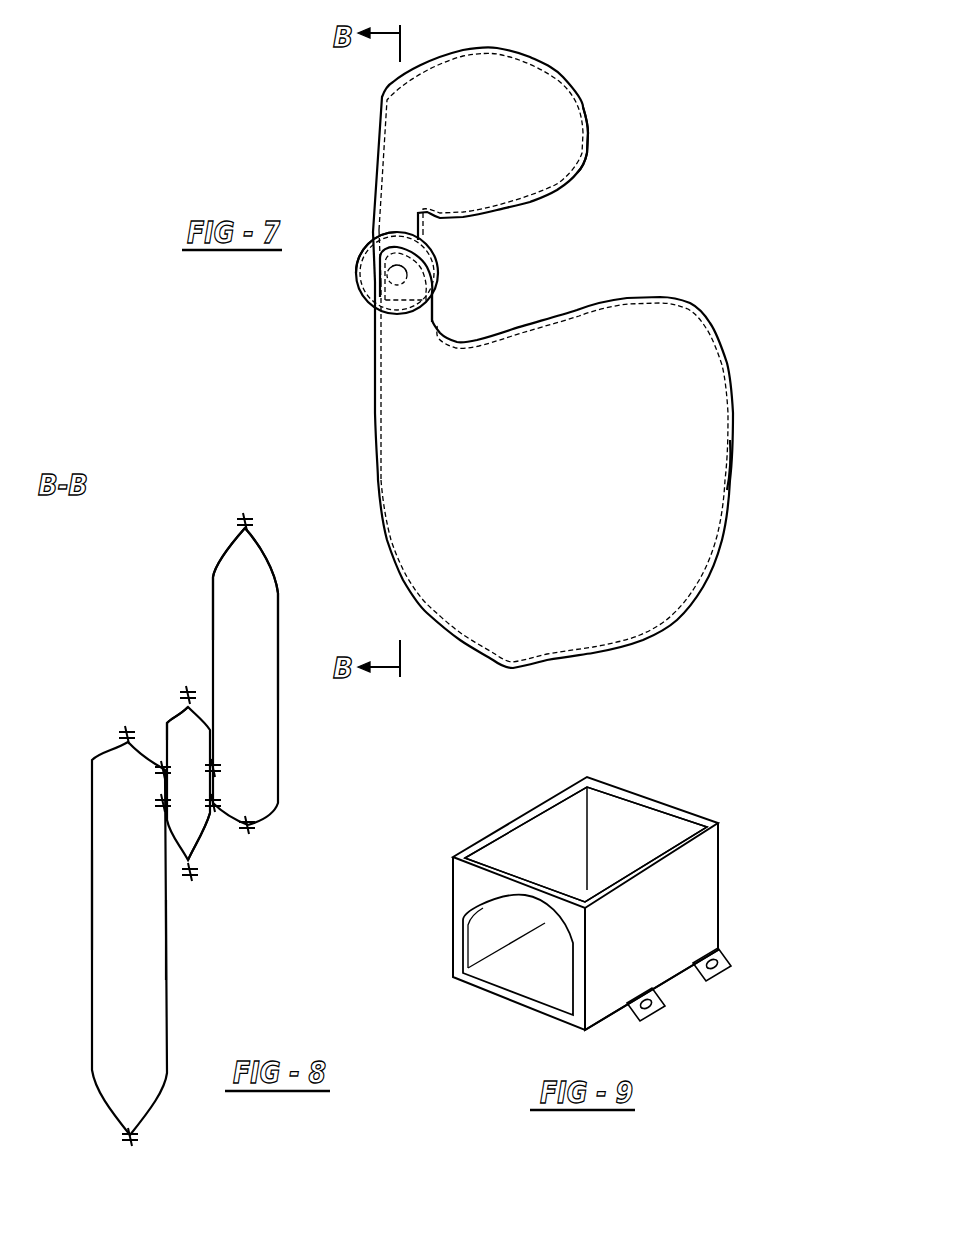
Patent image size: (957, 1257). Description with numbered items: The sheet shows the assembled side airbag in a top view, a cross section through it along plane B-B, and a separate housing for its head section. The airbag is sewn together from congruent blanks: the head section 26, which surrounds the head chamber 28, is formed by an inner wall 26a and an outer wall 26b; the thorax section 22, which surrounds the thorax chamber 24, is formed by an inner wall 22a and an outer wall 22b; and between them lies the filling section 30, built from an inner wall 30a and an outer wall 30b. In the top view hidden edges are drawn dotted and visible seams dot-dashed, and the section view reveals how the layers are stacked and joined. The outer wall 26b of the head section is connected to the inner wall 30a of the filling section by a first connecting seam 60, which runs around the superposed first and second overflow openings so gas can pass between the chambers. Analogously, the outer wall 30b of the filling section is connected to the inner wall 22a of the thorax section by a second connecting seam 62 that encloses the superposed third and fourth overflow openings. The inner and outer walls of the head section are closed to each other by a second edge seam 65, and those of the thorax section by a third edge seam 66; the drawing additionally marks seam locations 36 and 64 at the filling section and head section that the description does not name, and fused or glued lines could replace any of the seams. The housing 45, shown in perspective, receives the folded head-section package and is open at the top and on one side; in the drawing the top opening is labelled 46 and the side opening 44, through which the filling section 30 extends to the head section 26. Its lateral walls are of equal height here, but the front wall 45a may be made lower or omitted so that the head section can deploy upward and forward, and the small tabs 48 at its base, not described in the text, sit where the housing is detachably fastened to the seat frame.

In FIG. 8, the thorax section 22 is at (88, 1012).
In FIG. 8, the inner wall of the thorax section 22a is at (167, 937).
In FIG. 7, the outer wall of the thorax section 22b is at (658, 535).
In FIG. 8, the outer wall of the thorax section 22b is at (88, 895).
In FIG. 8, the thorax chamber 24 is at (130, 980).
In FIG. 8, the head section 26 is at (280, 803).
In FIG. 8, the inner wall of the head section 26a is at (278, 592).
In FIG. 7, the outer wall of the head section 26b is at (530, 103).
In FIG. 8, the outer wall of the head section 26b is at (213, 577).
In FIG. 8, the head chamber 28 is at (255, 652).
In FIG. 8, the filling section 30 is at (217, 830).
In FIG. 8, the inner wall of the filling section 30a is at (217, 833).
In FIG. 7, the outer wall of the filling section 30b is at (437, 262).
In FIG. 8, the outer wall of the filling section 30b is at (167, 730).
In FIG. 8, the top seam of connecting chamber 36 is at (183, 723).
In FIG. 9, the inflator housing opening 44 is at (527, 967).
In FIG. 9, the housing 45 is at (712, 771).
In FIG. 9, the front wall 45a is at (652, 892).
In FIG. 9, the housing top opening 46 is at (627, 822).
In FIG. 9, the mounting tab 48 is at (722, 962).
In FIG. 8, the first connecting seam 60 is at (331, 708).
In FIG. 8, the second connecting seam 62 is at (163, 810).
In FIG. 7, the top seam of second chamber 64 is at (580, 172).
In FIG. 8, the top seam of second chamber 64 is at (250, 520).
In FIG. 7, the second edge seam 65 is at (358, 277).
In FIG. 8, the second edge seam 65 is at (195, 877).
In FIG. 7, the third edge seam 66 is at (727, 470).
In FIG. 8, the third edge seam 66 is at (133, 1140).